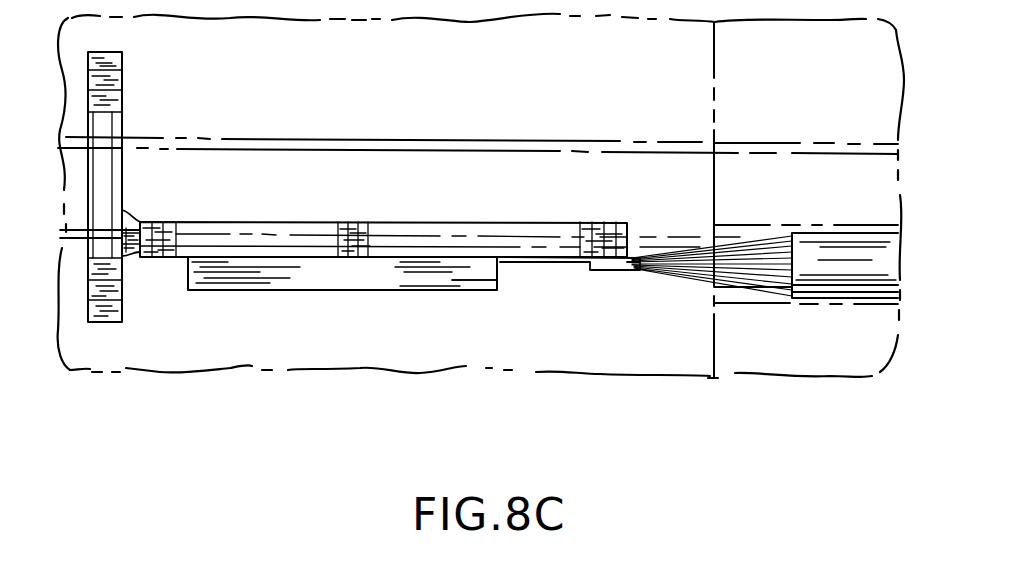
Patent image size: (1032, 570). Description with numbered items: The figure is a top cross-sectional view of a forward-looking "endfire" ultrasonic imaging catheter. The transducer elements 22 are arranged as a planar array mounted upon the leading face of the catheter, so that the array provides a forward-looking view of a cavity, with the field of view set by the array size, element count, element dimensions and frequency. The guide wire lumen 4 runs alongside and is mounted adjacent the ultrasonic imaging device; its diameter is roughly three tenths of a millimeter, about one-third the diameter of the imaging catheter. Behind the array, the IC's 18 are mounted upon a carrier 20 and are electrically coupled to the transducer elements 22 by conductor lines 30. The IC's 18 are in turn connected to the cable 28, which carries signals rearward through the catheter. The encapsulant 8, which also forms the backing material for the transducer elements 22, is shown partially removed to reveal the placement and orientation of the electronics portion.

The guide wire lumen 4 is at (268, 138).
The encapsulant 8 is at (397, 353).
The IC's 18 is at (460, 281).
The carrier 20 is at (570, 253).
The transducer elements 22 is at (100, 322).
The cable 28 is at (843, 287).
The conductor lines 30 is at (128, 254).